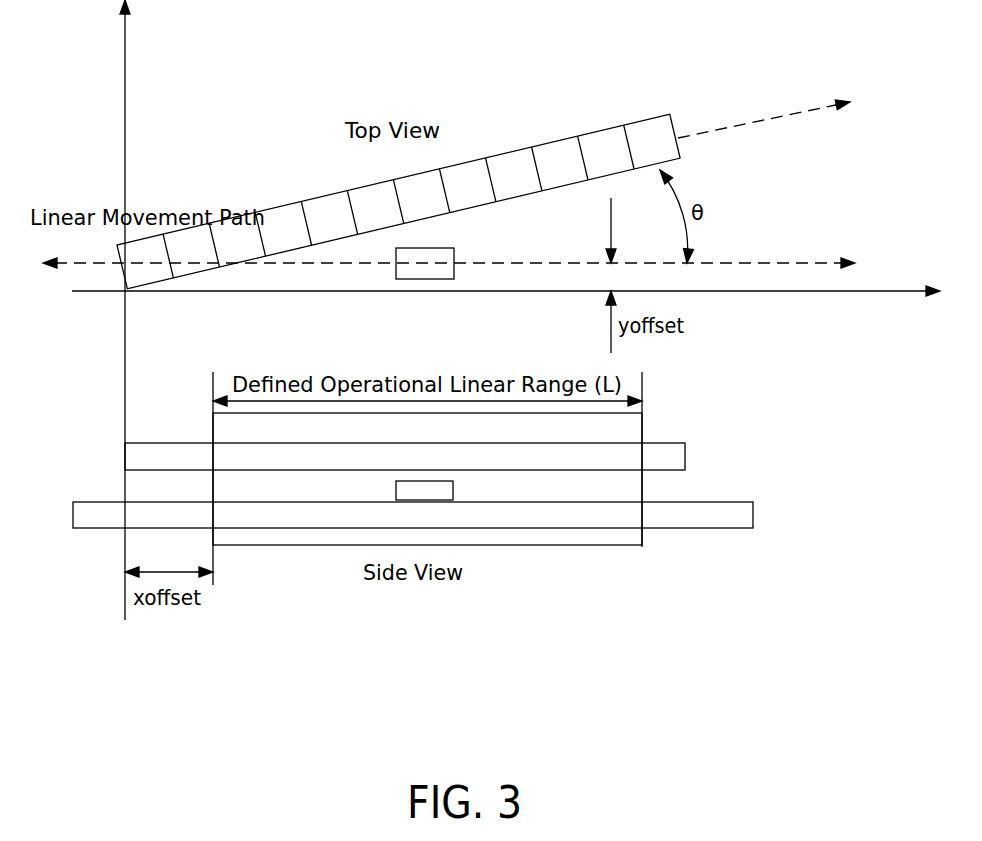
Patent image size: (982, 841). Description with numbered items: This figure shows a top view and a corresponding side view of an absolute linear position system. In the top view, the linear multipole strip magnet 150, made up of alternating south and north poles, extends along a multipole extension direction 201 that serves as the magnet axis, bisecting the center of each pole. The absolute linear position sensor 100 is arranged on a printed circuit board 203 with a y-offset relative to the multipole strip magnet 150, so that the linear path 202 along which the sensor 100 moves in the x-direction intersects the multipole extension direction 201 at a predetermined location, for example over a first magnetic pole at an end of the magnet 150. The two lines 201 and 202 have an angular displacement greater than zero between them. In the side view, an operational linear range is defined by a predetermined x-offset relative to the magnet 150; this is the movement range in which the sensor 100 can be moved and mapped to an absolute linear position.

The absolute linear position sensor 100 is at (454, 268).
The linear multipole strip magnet 150 is at (648, 118).
The multipole extension direction 201 is at (780, 118).
The linear path 202 is at (785, 263).
The printed circuit board 203 is at (753, 515).